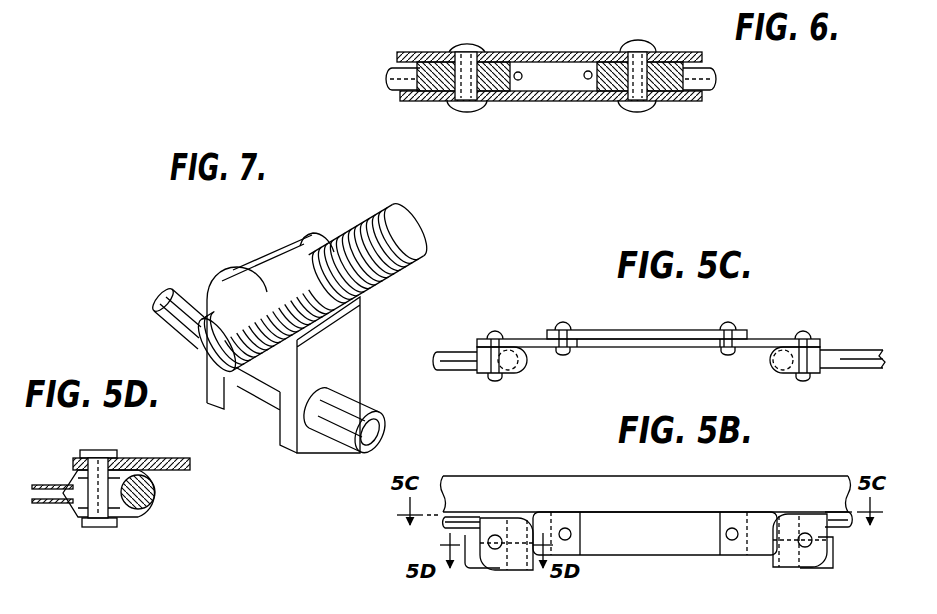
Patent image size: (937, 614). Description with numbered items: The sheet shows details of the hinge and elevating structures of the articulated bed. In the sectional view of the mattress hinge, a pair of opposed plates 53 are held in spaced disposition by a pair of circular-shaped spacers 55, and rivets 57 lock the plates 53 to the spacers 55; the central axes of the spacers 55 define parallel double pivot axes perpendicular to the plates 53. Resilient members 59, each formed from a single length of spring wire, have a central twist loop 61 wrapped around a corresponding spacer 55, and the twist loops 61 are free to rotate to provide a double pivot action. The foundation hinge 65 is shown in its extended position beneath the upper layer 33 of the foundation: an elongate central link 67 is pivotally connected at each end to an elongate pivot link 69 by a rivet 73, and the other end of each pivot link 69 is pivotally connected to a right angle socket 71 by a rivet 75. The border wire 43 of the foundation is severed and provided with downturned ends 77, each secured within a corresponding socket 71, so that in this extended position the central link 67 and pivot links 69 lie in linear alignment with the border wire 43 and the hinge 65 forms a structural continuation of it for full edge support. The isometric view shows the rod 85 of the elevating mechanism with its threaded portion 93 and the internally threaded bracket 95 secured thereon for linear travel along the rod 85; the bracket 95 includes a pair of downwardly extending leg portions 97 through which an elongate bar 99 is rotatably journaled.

In FIG. 5B, the upper layer 33 is at (690, 503).
In FIG. 5C, the border wire 43 is at (453, 352).
In FIG. 5B, the border wire 43 is at (458, 517).
In FIG. 6, the plates 53 is at (553, 48).
In FIG. 5D, the plates 53 is at (138, 458).
In FIG. 6, the circular-shaped spacers 55 is at (490, 62).
In FIG. 6, the rivets 57 is at (458, 47).
In FIG. 6, the resilient members 59 is at (395, 93).
In FIG. 6, the central twist loop 61 is at (523, 78).
In FIG. 5C, the double linkage hinge 65 is at (651, 328).
In FIG. 5C, the elongate central link 67 is at (629, 347).
In FIG. 5B, the elongate central link 67 is at (660, 530).
In FIG. 5C, the elongate pivot links 69 is at (529, 338).
In FIG. 5B, the elongate pivot links 69 is at (542, 518).
In FIG. 5C, the right angle sockets 71 is at (527, 370).
In FIG. 5B, the right angle sockets 71 is at (496, 523).
In FIG. 5D, the right angle sockets 71 is at (158, 516).
In FIG. 5C, the rivet 73 is at (572, 324).
In FIG. 5B, the rivet 73 is at (571, 534).
In FIG. 5C, the rivet 75 is at (495, 330).
In FIG. 5B, the rivet 75 is at (811, 568).
In FIG. 5D, the rivet 75 is at (96, 452).
In FIG. 5D, the downturned ends 77 is at (163, 486).
In FIG. 7, the rod 85 is at (432, 243).
In FIG. 7, the threaded portion 93 is at (412, 212).
In FIG. 7, the bracket 95 is at (284, 266).
In FIG. 7, the leg portions 97 is at (283, 437).
In FIG. 7, the elongate bar 99 is at (347, 407).